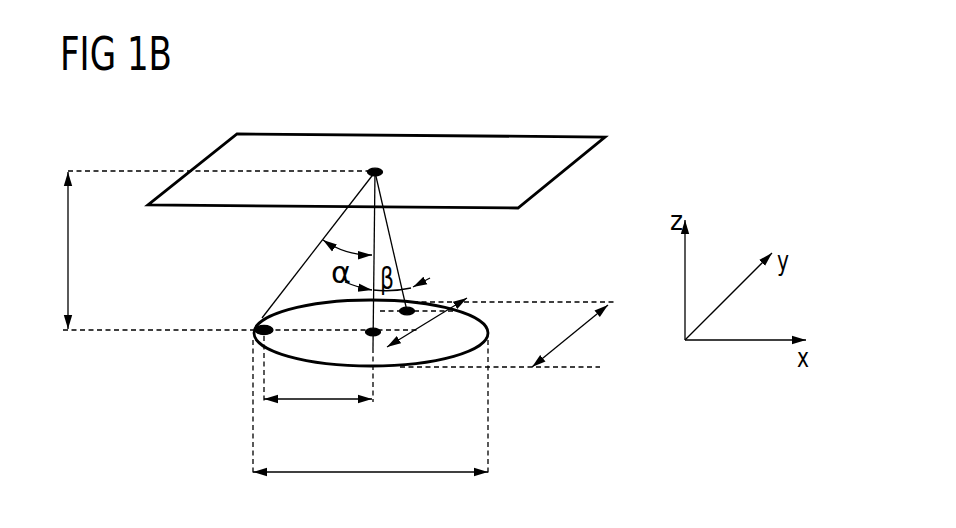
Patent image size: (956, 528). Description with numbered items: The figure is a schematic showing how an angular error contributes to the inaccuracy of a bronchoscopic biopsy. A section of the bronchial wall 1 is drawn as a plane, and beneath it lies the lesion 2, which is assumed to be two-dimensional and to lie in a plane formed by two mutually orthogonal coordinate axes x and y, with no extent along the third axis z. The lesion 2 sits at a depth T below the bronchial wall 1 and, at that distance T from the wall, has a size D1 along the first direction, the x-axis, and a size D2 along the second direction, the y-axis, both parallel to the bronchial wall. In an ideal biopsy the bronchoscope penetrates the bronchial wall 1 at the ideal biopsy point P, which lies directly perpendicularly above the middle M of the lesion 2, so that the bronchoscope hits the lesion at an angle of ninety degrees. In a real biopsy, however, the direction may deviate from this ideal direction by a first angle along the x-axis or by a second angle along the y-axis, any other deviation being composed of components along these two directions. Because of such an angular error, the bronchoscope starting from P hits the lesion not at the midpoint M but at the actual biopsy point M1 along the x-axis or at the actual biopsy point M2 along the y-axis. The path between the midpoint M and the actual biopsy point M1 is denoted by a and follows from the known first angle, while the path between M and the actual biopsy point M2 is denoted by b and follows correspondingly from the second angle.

The bronchial wall 1 is at (513, 157).
The lesion 2 is at (477, 328).
The ideal biopsy point P is at (376, 168).
The actual biopsy point along the x-axis M1 is at (262, 324).
The actual biopsy point along the y-axis M2 is at (412, 303).
The midpoint of the lesion M is at (373, 338).
The depth T is at (77, 250).
The path between midpoint and actual biopsy point along the x-axis a is at (318, 382).
The path between midpoint and actual biopsy point along the y-axis b is at (427, 323).
The size of the lesion along the first direction D1 is at (370, 452).
The size of the lesion along the second direction D2 is at (570, 336).